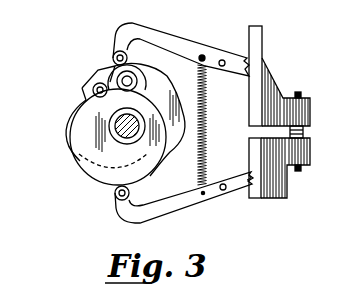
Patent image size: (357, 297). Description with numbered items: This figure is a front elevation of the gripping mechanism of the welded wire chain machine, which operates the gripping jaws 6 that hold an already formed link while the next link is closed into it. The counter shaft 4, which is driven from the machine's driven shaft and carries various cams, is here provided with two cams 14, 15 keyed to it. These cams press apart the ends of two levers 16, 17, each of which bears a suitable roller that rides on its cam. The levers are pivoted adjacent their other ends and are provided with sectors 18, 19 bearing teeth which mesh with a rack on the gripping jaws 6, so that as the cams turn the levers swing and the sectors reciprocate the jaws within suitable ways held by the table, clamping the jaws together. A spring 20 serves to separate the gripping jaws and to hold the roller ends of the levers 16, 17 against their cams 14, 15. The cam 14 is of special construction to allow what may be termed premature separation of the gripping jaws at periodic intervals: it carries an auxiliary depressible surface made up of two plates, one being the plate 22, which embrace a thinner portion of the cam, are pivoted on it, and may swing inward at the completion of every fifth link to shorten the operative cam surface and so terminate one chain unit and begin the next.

The counter shaft 4 is at (127, 138).
The gripping jaws 6 is at (310, 113).
The cam 14 is at (153, 80).
The cam 15 is at (75, 160).
The lever 16 is at (166, 34).
The lever 17 is at (175, 211).
The sector 18 is at (248, 59).
The sector 19 is at (249, 189).
The spring 20 is at (208, 127).
The plate 22 is at (90, 82).